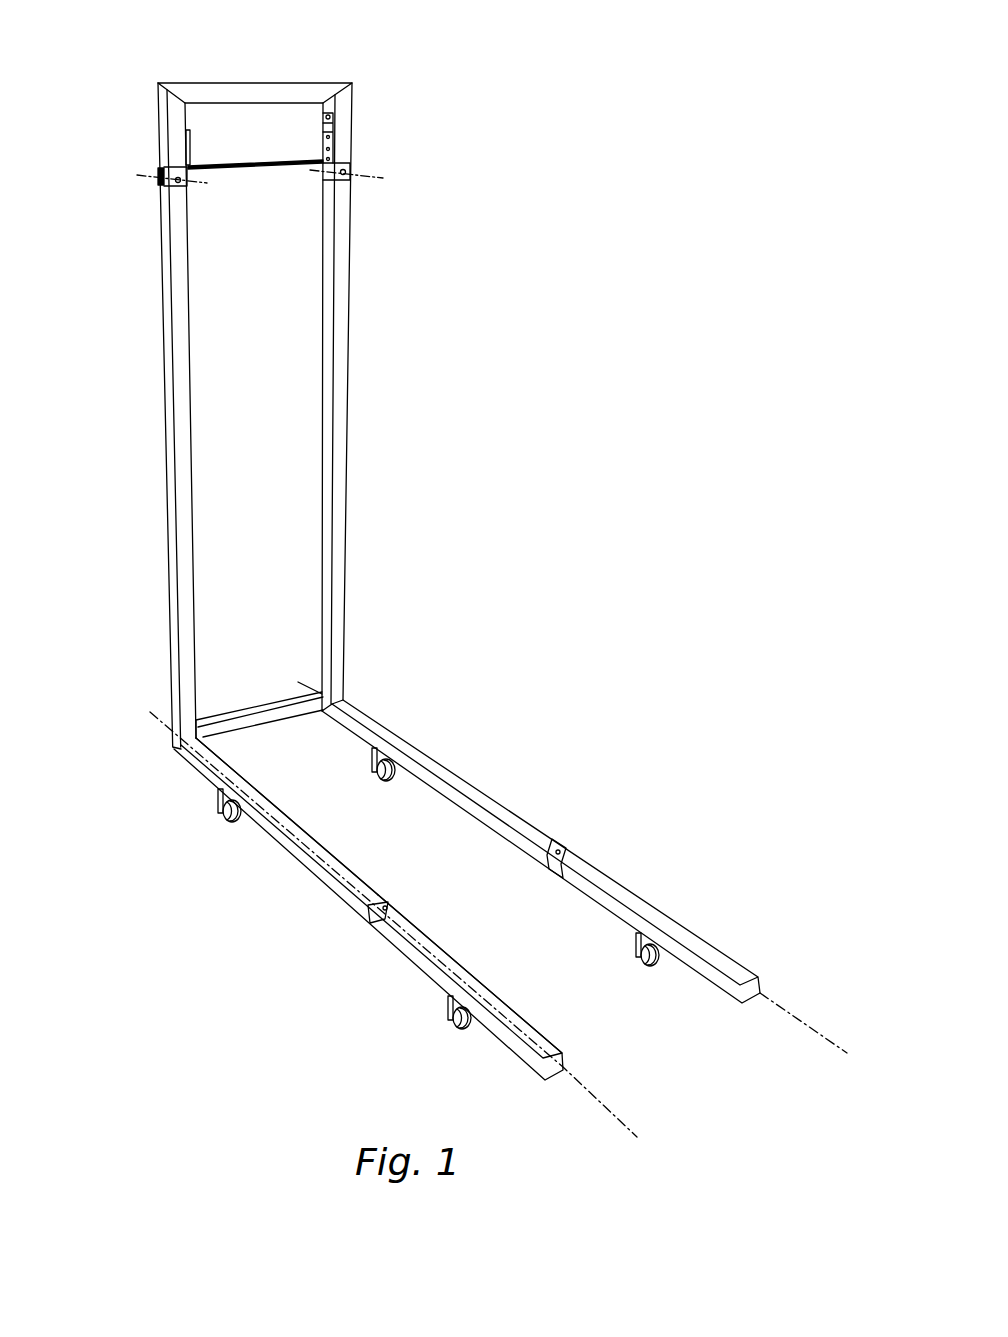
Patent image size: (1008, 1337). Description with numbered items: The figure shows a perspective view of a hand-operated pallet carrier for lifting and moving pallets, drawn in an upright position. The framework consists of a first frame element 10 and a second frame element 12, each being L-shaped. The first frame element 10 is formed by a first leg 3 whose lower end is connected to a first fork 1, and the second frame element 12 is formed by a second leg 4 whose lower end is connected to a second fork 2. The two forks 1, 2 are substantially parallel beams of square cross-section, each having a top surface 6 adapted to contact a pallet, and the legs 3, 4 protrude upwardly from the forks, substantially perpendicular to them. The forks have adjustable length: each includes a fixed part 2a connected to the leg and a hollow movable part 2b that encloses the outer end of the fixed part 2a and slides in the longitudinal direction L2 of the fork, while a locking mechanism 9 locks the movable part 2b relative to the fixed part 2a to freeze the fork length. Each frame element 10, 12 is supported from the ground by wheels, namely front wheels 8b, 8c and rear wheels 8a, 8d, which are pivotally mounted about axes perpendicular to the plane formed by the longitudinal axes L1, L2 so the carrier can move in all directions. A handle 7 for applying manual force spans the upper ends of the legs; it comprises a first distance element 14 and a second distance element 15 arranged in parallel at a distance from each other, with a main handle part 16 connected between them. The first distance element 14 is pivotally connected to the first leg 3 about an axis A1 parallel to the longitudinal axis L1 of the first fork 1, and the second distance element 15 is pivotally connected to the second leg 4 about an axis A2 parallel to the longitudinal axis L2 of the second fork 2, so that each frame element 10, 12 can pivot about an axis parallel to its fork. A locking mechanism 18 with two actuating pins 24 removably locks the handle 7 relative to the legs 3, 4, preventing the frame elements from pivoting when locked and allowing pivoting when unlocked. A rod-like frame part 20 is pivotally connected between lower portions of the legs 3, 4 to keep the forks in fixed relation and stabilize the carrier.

The first fork 1 is at (510, 803).
The second fork 2 is at (313, 880).
The fixed part 2a is at (272, 838).
The movable part 2b is at (415, 962).
The first leg 3 is at (343, 373).
The second leg 4 is at (180, 373).
The top surface 6 is at (655, 915).
The handle 7 is at (340, 81).
The rear wheel 8a is at (375, 765).
The front wheel 8b is at (633, 950).
The front wheel 8c is at (445, 1020).
The rear wheel 8d is at (218, 806).
The locking mechanism 9 is at (376, 918).
The first frame element 10 is at (360, 622).
The second frame element 12 is at (143, 628).
The first distance element 14 is at (348, 130).
The second distance element 15 is at (176, 130).
The main handle part 16 is at (255, 86).
The locking mechanism 18 is at (330, 152).
The frame part 20 is at (256, 715).
The actuating pins 24 is at (285, 170).
The axis A1 is at (365, 177).
The axis A2 is at (150, 177).
The longitudinal axis L1 is at (805, 1027).
The longitudinal axis L2 is at (600, 1104).